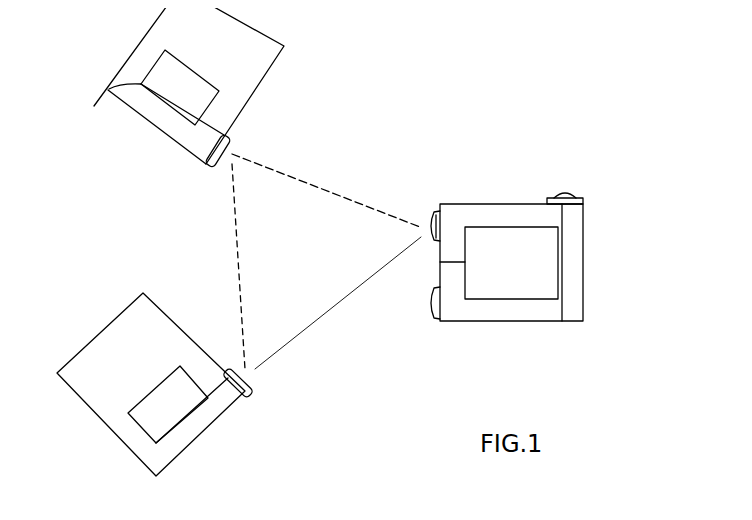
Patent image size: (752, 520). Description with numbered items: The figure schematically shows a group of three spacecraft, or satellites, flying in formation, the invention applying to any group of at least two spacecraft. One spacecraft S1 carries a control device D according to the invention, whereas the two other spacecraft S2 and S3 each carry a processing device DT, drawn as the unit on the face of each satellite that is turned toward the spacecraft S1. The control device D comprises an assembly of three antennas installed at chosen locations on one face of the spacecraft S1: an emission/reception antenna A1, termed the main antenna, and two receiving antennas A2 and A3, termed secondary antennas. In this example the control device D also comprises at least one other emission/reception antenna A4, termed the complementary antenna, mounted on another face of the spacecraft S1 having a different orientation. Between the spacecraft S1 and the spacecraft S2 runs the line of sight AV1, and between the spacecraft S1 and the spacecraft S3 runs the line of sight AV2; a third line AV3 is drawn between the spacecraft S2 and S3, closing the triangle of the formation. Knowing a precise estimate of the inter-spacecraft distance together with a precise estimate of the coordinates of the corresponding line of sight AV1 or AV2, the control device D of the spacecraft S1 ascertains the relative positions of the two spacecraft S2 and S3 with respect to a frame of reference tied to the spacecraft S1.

The spacecraft S1 is at (576, 263).
The spacecraft S2 is at (108, 312).
The spacecraft S3 is at (137, 30).
The processing device DT is at (204, 445).
The line of sight AV1 is at (305, 314).
The line of sight AV2 is at (272, 164).
The third line of sight / viewing direction AV3 is at (228, 219).
The emission/reception antenna A1 is at (430, 196).
The receiving antenna A2 is at (469, 201).
The receiving antenna A3 is at (432, 313).
The emission/reception antenna A4 is at (578, 190).
The control device D is at (540, 291).